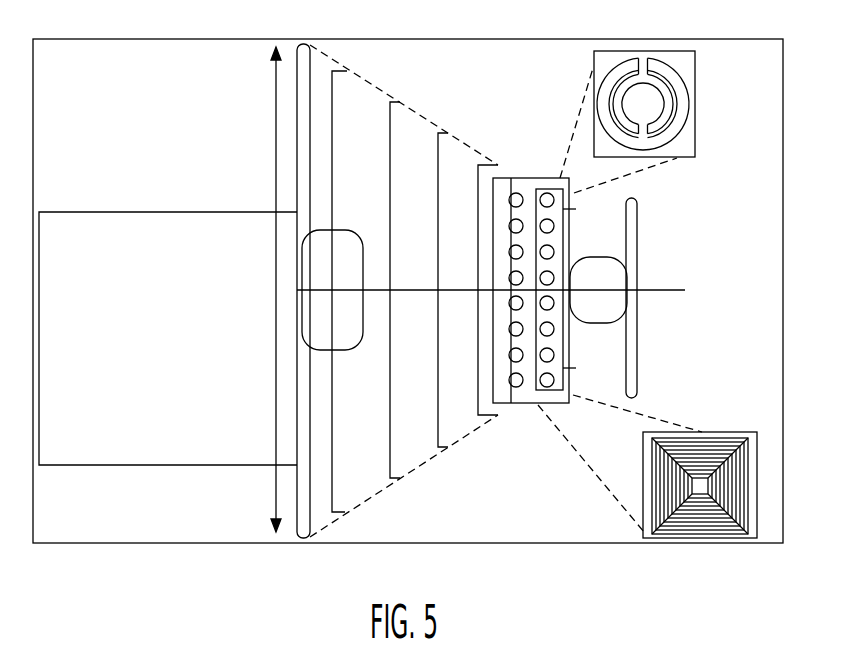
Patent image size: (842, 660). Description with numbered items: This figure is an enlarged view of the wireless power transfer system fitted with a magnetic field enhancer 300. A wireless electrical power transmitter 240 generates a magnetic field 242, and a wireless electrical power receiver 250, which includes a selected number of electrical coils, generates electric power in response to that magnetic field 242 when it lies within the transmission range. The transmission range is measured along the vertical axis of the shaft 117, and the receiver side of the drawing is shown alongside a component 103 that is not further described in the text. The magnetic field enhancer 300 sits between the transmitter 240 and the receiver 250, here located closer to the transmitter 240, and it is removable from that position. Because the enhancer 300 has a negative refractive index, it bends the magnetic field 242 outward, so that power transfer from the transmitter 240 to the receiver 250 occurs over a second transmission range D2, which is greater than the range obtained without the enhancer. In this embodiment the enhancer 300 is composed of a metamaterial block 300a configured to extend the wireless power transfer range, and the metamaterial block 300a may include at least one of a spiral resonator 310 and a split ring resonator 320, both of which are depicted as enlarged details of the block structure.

The shaft 117 is at (168, 141).
The image sensor module 103 is at (145, 305).
The second transmission range D2 is at (276, 333).
The magnetic field 242 is at (391, 456).
The wireless electrical power receiver 250 is at (343, 243).
The magnetic field enhancer 300 is at (492, 330).
The metamaterial block 300a is at (498, 181).
The wireless electrical power transmitter 240 is at (606, 270).
The split ring resonator 320 is at (684, 130).
The spiral resonator 310 is at (670, 527).